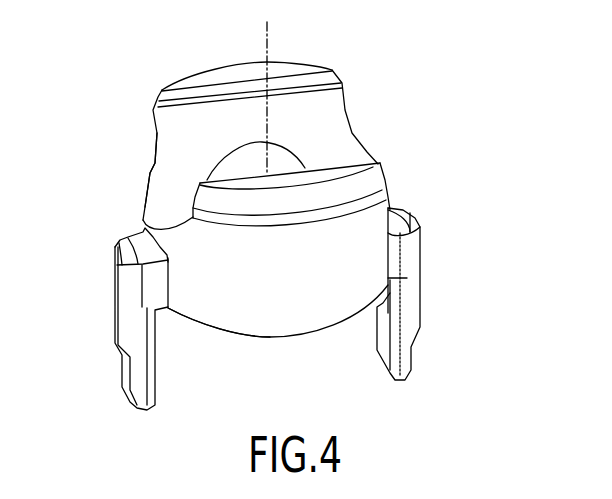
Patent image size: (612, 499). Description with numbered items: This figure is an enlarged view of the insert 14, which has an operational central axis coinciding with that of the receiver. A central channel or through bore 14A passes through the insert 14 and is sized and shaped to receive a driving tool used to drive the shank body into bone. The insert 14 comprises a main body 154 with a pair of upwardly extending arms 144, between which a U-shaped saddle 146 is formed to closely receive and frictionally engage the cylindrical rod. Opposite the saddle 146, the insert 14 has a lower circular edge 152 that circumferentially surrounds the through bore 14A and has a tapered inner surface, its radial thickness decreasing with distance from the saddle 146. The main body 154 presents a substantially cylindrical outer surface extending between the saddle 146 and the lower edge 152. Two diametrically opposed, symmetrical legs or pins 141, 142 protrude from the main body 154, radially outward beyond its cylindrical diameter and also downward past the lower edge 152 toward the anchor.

The insert 14 is at (359, 58).
The through bore 14A is at (247, 170).
The leg or pin 141 is at (413, 302).
The leg or pin 142 is at (130, 331).
The upwardly extending arms 144 is at (226, 78).
The saddle 146 is at (163, 182).
The lower circular edge 152 is at (228, 338).
The main body 154 is at (298, 278).